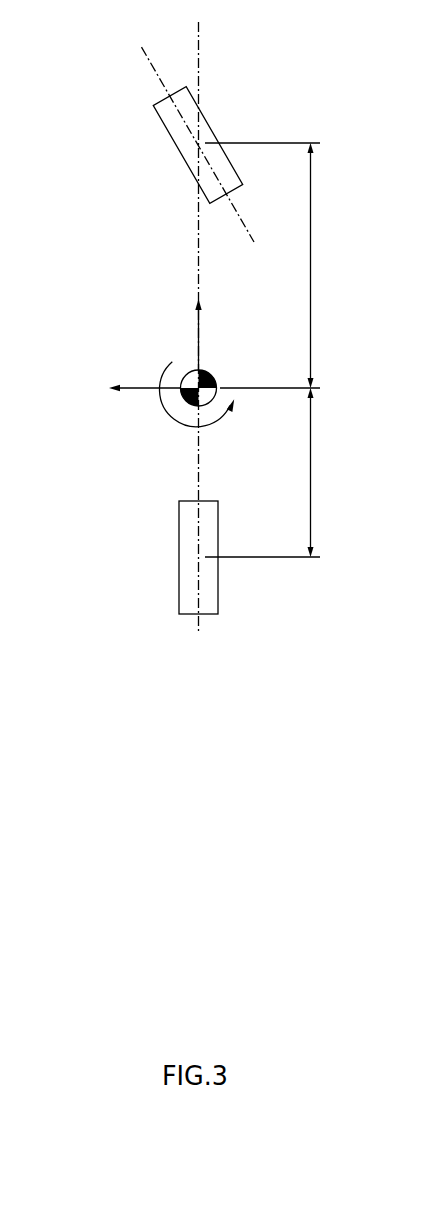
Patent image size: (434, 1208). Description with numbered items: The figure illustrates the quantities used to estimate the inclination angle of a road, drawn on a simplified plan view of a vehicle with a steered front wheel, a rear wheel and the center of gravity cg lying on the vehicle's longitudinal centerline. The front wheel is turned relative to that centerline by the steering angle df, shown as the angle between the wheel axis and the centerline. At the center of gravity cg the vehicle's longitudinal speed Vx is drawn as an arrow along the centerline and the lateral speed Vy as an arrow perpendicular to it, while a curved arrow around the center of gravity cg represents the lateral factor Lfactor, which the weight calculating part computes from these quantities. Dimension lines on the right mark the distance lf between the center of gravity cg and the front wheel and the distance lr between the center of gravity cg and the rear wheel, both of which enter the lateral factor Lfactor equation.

The steering angle df is at (198, 50).
The center of gravity cg is at (132, 357).
The longitudinal speed Vx is at (213, 334).
The lateral speed Vy is at (142, 405).
The lateral factor Lfactor is at (231, 394).
The distance between center of gravity and front wheel lf is at (324, 265).
The distance between center of gravity and rear wheel lr is at (324, 472).